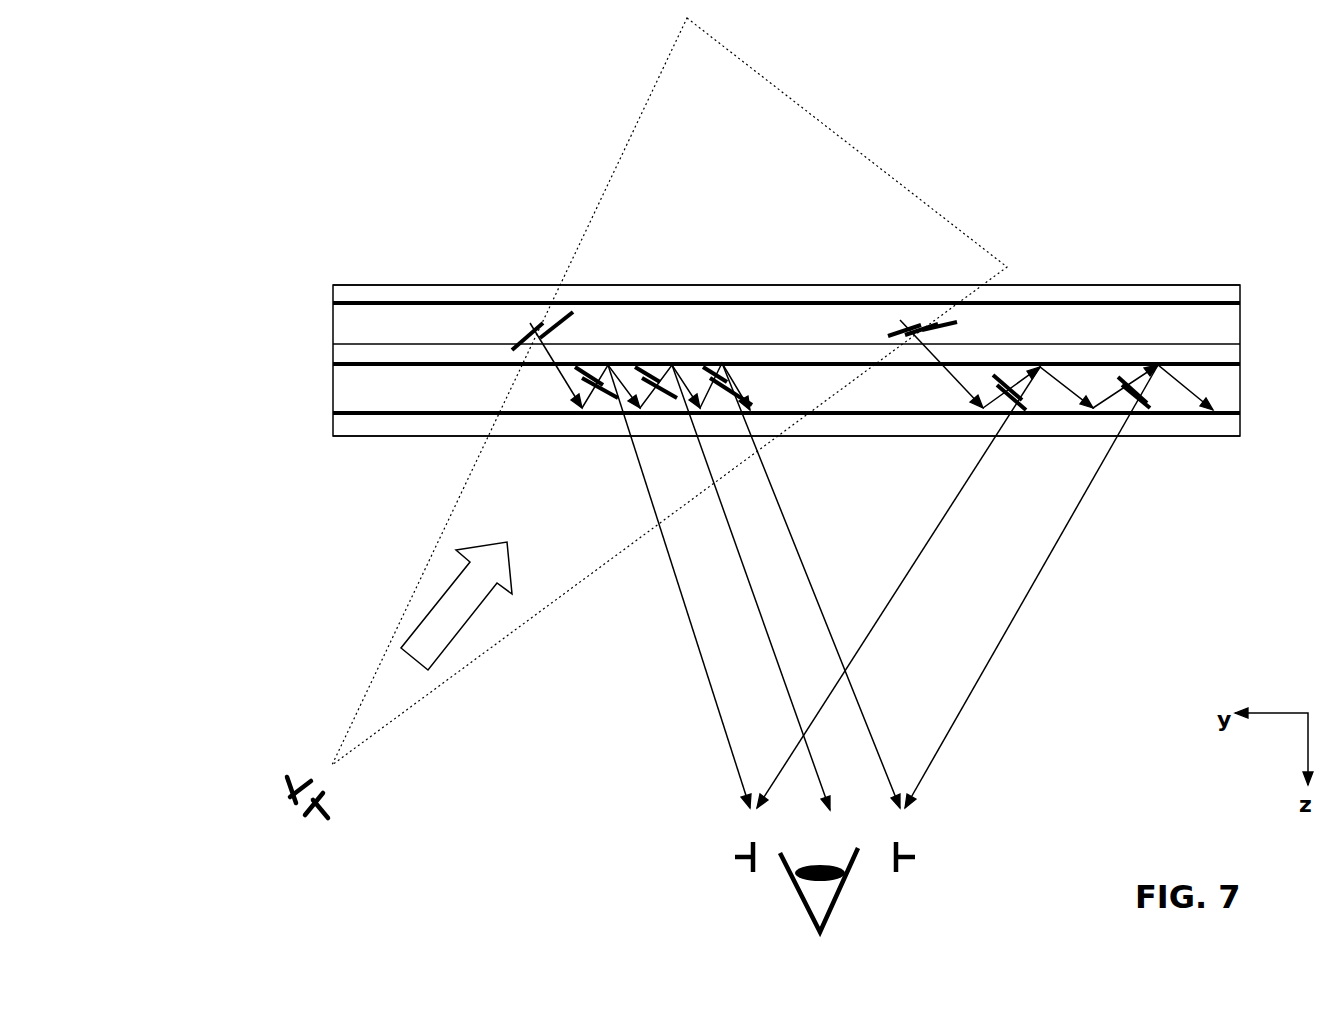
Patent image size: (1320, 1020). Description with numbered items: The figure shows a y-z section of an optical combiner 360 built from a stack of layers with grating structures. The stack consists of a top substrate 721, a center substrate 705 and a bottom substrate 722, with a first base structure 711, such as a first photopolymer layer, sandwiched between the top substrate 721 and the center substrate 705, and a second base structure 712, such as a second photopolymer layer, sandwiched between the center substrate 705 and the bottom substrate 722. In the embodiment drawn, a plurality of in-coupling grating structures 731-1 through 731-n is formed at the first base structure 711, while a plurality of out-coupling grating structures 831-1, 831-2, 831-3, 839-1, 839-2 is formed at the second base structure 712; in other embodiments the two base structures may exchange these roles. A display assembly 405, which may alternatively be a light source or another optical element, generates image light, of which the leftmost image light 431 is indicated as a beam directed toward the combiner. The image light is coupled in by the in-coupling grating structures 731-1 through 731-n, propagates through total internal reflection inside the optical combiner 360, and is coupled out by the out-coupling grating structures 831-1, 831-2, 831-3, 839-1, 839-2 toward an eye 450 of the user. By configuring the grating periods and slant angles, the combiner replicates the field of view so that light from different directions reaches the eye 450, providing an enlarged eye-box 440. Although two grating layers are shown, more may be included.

The optical combiner 360 is at (428, 173).
The top substrate 721 is at (360, 291).
The first base structure 711 is at (345, 325).
The center substrate 705 is at (345, 353).
The second base structure 712 is at (348, 398).
The bottom substrate 722 is at (390, 428).
The in-coupling grating structure 731-1 is at (530, 323).
The in-coupling grating structure 731-n is at (900, 320).
The out-coupling grating structure 831-1 is at (603, 395).
The out-coupling grating structure 831-2 is at (657, 395).
The out-coupling grating structure 831-3 is at (747, 395).
The out-coupling grating structure 839-1 is at (1003, 400).
The out-coupling grating structure 839-2 is at (1125, 400).
The leftmost image light 431 is at (393, 635).
The display assembly 405 is at (300, 815).
The eye-box 440 is at (738, 857).
The eye 450 is at (830, 890).